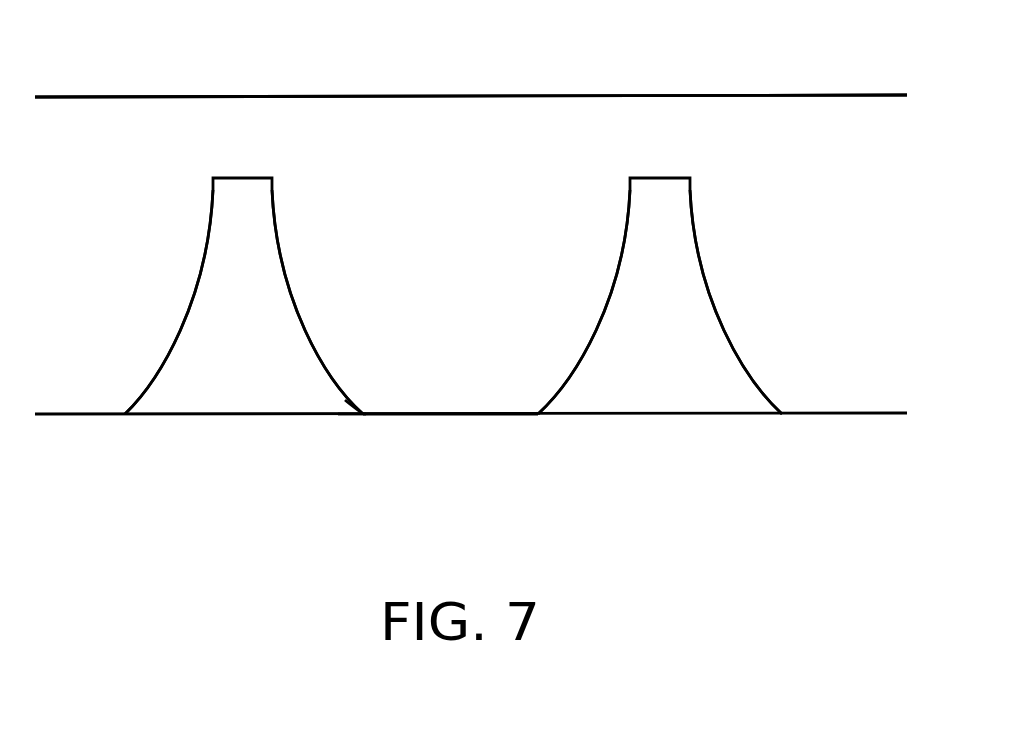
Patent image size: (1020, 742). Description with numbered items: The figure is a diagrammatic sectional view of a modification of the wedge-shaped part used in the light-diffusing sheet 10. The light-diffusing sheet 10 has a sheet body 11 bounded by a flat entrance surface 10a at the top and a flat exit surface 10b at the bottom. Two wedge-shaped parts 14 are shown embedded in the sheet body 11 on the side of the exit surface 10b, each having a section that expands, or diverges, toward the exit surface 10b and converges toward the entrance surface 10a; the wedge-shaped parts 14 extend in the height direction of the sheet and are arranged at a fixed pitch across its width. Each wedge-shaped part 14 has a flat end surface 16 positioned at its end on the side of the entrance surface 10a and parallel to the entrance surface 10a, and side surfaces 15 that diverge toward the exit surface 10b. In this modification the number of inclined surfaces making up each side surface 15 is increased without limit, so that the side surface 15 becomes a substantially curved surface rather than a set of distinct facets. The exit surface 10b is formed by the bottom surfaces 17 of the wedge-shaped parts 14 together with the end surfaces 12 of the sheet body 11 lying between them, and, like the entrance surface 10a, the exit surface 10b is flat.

The light-diffusing sheet 10 is at (297, 70).
The entrance surface 10a is at (157, 96).
The exit surface 10b is at (452, 481).
The sheet body 11 is at (454, 120).
The end surfaces 12 is at (432, 416).
The wedge-shaped part 14 is at (275, 312).
The side surface 15 is at (280, 257).
The flat end surface 16 is at (246, 177).
The bottom surface 17 is at (348, 416).